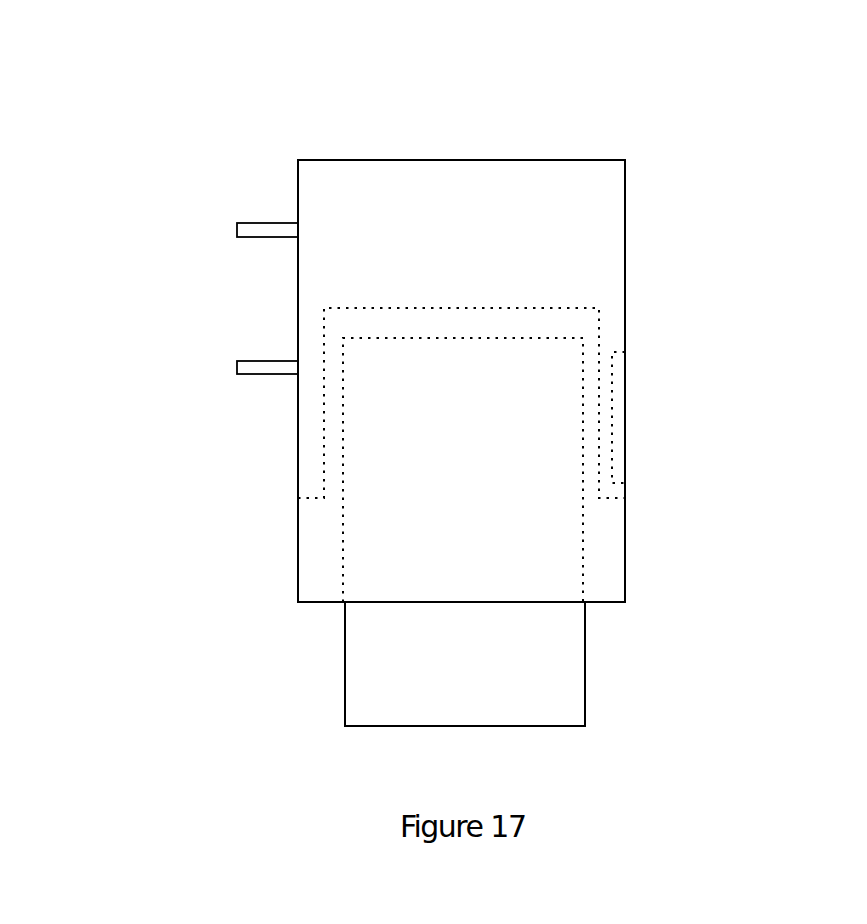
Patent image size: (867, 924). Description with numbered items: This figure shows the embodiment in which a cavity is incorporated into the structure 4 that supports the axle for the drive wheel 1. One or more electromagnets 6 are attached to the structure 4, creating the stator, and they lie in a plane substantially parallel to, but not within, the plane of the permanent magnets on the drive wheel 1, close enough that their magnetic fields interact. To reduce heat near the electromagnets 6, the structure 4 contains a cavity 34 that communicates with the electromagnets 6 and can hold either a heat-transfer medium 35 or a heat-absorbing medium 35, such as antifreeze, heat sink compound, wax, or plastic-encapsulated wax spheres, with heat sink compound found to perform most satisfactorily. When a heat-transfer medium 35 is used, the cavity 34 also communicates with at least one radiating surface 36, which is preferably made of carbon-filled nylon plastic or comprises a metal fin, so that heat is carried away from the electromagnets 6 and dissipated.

The drive wheel 1 is at (505, 518).
The structure 4 is at (625, 226).
The electromagnet 6 is at (622, 421).
The cavity 34 is at (370, 222).
The heat-transfer medium 35 is at (538, 223).
The radiating surface 36 is at (258, 369).